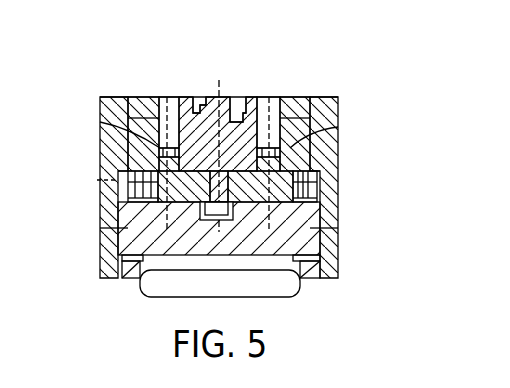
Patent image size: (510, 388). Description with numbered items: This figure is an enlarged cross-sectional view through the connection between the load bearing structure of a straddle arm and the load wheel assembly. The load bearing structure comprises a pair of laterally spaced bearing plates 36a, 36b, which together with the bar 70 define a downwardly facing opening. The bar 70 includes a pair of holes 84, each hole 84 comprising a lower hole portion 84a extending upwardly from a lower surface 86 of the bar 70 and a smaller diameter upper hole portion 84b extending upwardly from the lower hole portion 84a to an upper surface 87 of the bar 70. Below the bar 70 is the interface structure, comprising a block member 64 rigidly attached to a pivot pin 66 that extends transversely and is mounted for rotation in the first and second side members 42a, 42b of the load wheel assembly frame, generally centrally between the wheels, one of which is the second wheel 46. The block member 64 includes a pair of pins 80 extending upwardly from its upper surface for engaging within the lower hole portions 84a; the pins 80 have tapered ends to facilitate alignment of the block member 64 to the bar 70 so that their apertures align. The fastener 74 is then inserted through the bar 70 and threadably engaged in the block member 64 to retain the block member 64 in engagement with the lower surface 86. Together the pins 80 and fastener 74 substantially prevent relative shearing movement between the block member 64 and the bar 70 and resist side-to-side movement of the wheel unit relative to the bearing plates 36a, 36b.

The bearing plate 36a is at (100, 164).
The bearing plate 36b is at (332, 163).
The first side member 42a is at (105, 197).
The second side member 42b is at (320, 190).
The second wheel 46 is at (287, 292).
The block member 64 is at (263, 97).
The pivot pin 66 is at (318, 240).
The bar 70 is at (137, 97).
The fastener 74 is at (216, 95).
The pin 80 is at (182, 97).
The hole 84 is at (113, 97).
The lower hole portion 84a is at (100, 122).
The upper hole portion 84b is at (153, 134).
The lower surface 86 is at (98, 226).
The upper surface 87 is at (245, 97).